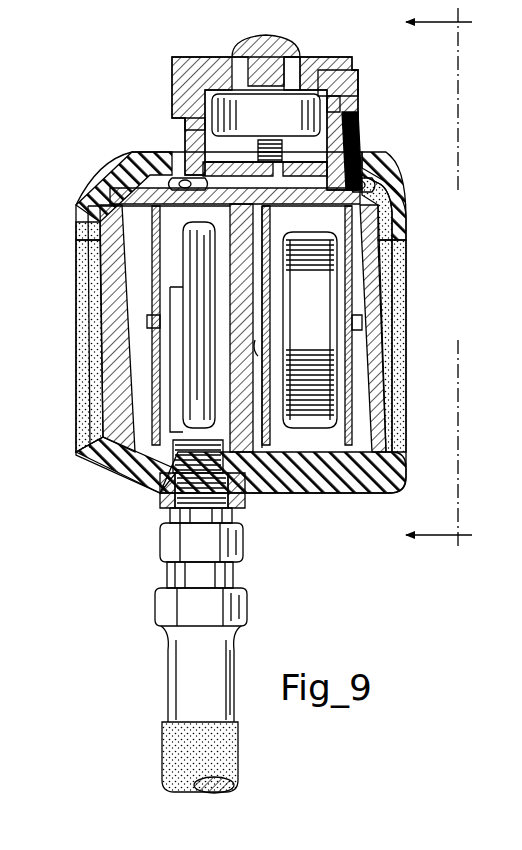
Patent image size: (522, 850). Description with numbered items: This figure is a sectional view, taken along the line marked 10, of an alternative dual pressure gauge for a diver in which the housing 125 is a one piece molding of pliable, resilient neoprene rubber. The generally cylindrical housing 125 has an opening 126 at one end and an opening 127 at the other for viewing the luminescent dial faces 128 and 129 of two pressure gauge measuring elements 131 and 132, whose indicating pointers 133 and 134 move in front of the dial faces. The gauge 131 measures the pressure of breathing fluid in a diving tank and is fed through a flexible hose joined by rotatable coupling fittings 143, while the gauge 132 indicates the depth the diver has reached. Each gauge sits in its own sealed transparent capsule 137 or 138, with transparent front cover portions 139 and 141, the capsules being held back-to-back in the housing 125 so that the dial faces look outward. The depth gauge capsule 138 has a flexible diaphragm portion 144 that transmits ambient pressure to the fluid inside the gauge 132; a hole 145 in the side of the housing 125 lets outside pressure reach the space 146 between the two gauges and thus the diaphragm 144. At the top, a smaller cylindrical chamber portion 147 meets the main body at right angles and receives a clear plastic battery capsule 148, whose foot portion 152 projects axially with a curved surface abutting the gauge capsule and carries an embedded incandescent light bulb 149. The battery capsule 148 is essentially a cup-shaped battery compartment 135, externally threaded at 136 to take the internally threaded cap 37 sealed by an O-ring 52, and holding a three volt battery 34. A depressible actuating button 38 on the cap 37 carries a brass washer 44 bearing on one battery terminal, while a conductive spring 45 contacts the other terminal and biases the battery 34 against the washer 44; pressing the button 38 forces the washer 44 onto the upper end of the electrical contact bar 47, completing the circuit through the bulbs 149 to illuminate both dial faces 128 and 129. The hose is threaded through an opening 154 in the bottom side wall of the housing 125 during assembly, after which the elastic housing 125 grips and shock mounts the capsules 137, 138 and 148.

The section line 10- 10 is at (448, 282).
The battery 34 is at (266, 115).
The cap 37 is at (208, 57).
The actuating button 38 is at (293, 43).
The brass washer 44 is at (305, 80).
The conductive spring 45 is at (263, 139).
The electrical contact bar 47 is at (335, 113).
The O-ring 52 is at (345, 83).
The housing 125 is at (150, 164).
The opening 126 is at (78, 206).
The opening 127 is at (410, 206).
The dial face 128 is at (148, 323).
The dial face 129 is at (368, 323).
The pressure gauge measuring element 131 is at (178, 345).
The pressure gauge measuring element 132 is at (320, 367).
The indicating pointer 133 is at (165, 376).
The indicating pointer 134 is at (365, 276).
The battery compartment 135 is at (152, 233).
The external threads 136 is at (356, 241).
The sealed container (capsule) 137 is at (113, 170).
The sealed container (capsule) 138 is at (310, 216).
The transparent front cover portion 139 is at (103, 276).
The transparent front cover portion 141 is at (400, 395).
The rotatable coupling fittings 143 is at (157, 624).
The flexible diaphragm portion 144 is at (260, 323).
The hole 145 is at (262, 485).
The space 146 is at (258, 349).
The cylindrical chamber portion 147 is at (362, 127).
The battery capsule 148 is at (207, 108).
The incandescent light bulbs 149 is at (177, 172).
The foot portion 152 is at (392, 173).
The opening 154 is at (150, 495).